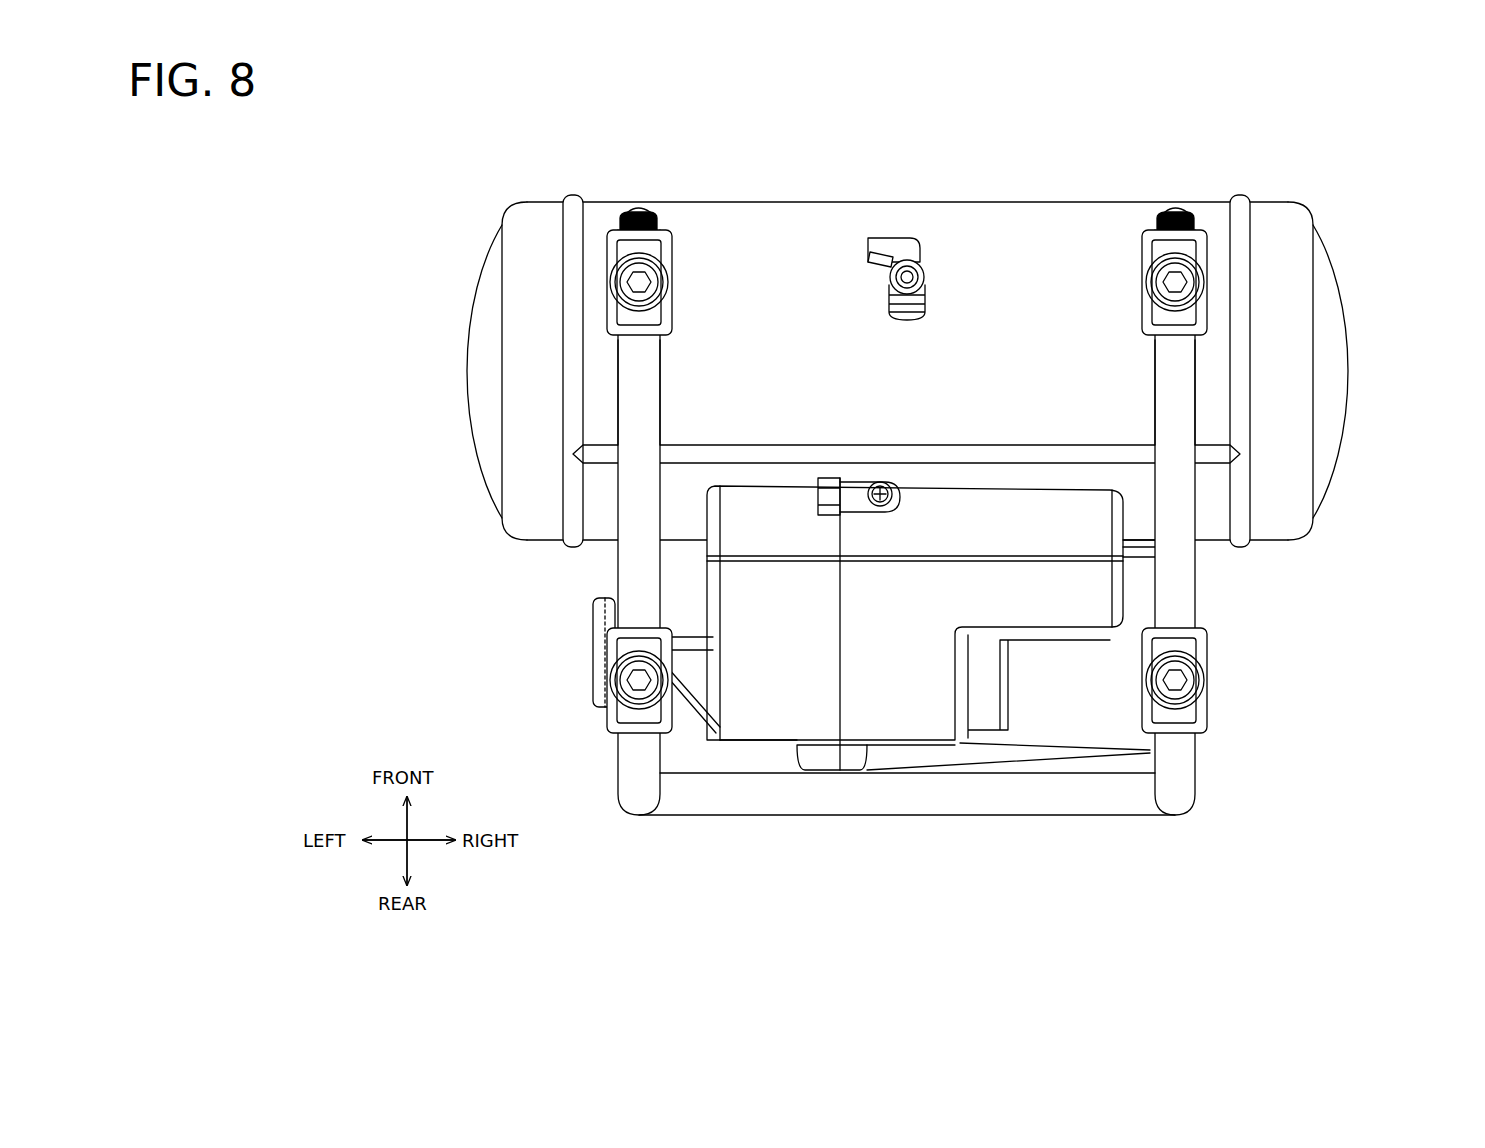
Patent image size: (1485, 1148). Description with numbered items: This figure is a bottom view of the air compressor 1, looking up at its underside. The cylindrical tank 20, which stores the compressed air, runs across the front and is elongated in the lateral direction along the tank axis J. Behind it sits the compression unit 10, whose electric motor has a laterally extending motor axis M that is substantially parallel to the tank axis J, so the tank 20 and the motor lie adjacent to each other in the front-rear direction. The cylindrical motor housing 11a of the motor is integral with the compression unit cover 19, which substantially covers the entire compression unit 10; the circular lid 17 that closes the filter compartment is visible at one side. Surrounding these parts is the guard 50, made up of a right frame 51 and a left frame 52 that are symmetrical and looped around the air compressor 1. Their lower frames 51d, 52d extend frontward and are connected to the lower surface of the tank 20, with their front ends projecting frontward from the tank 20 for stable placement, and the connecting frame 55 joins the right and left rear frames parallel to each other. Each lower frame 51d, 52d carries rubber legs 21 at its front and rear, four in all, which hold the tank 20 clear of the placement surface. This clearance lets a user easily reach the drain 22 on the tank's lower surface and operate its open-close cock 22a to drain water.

The air compressor 1 is at (464, 190).
The compression unit 10 is at (931, 689).
The motor housing 11a is at (1078, 718).
The lid 17 is at (594, 622).
The compression unit cover 19 is at (903, 683).
The tank 20 is at (1037, 232).
The legs 21 is at (670, 245).
The drain 22 is at (913, 222).
The open-close cock 22a is at (887, 247).
The guard 50 is at (904, 585).
The right frame 51 is at (1293, 522).
The lower frame 51d is at (1178, 410).
The left frame 52 is at (519, 522).
The lower frame 52d is at (636, 400).
The connecting frame 55 is at (857, 800).
The tank axis J is at (1328, 370).
The motor axis M is at (1215, 655).